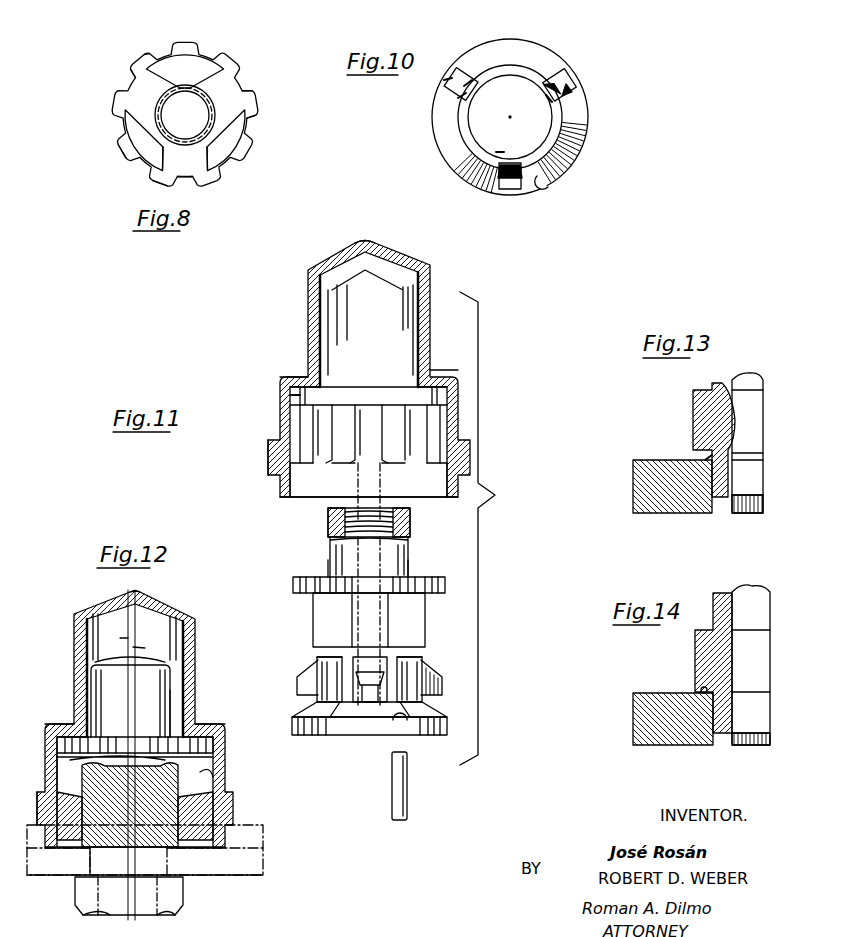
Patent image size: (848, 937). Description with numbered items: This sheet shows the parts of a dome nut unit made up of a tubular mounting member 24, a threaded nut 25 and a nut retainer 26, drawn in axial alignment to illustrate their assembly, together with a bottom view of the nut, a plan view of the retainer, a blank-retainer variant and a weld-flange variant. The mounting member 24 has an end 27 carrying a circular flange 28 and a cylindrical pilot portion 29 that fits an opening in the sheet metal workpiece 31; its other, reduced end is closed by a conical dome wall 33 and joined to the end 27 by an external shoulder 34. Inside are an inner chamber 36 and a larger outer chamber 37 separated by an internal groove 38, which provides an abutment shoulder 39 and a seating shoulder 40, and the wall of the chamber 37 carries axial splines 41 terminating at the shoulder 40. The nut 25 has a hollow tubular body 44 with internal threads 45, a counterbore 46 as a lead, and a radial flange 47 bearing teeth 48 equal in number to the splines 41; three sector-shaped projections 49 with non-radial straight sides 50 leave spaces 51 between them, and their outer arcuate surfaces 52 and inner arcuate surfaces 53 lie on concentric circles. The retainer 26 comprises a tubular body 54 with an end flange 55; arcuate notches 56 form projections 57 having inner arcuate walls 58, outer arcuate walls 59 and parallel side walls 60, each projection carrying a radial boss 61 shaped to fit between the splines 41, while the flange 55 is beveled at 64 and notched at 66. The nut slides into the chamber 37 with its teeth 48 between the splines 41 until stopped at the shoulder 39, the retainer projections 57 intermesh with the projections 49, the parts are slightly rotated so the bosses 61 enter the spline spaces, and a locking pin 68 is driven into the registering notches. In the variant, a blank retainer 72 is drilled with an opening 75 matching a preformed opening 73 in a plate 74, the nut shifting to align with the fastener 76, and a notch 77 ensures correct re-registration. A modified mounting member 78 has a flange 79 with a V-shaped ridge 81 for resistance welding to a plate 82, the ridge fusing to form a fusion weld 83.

In FIG. 11, the tubular mounting member 24 is at (308, 332).
In FIG. 12, the tubular mounting member 24 is at (68, 676).
In FIG. 8, the threaded nut 25 is at (245, 72).
In FIG. 11, the threaded nut 25 is at (419, 553).
In FIG. 12, the threaded nut 25 is at (184, 686).
In FIG. 10, the nut retainer 26 is at (563, 47).
In FIG. 11, the nut retainer 26 is at (427, 667).
In FIG. 11, the end of mounting member 27 is at (280, 422).
In FIG. 12, the end of mounting member 27 is at (43, 760).
In FIG. 11, the circular flange 28 is at (268, 458).
In FIG. 12, the circular flange 28 is at (37, 797).
In FIG. 11, the cylindrical pilot portion 29 is at (280, 490).
In FIG. 12, the sheet metal workpiece 31 is at (255, 825).
In FIG. 11, the conical dome wall 33 is at (358, 250).
In FIG. 12, the conical dome wall 33 is at (103, 610).
In FIG. 11, the external shoulder 34 is at (445, 372).
In FIG. 12, the external shoulder 34 is at (60, 723).
In FIG. 11, the inner chamber 36 is at (396, 302).
In FIG. 12, the inner chamber 36 is at (157, 636).
In FIG. 11, the outer chamber 37 is at (332, 490).
In FIG. 11, the internal groove 38 is at (290, 390).
In FIG. 11, the abutment shoulder 39 is at (390, 392).
In FIG. 11, the seating shoulder 40 is at (290, 398).
In FIG. 11, the splines 41 is at (362, 418).
In FIG. 12, the splines 41 is at (45, 740).
In FIG. 11, the hollow tubular body 44 is at (337, 548).
In FIG. 12, the hollow tubular body 44 is at (100, 677).
In FIG. 8, the internal threads 45 is at (185, 115).
In FIG. 11, the internal threads 45 is at (328, 518).
In FIG. 8, the counterbore 46 is at (208, 110).
In FIG. 8, the radial flange 47 is at (255, 110).
In FIG. 11, the radial flange 47 is at (293, 588).
In FIG. 12, the radial flange 47 is at (135, 745).
In FIG. 8, the teeth 48 is at (150, 62).
In FIG. 11, the teeth 48 is at (448, 567).
In FIG. 12, the teeth 48 is at (192, 727).
In FIG. 8, the projections 49 is at (196, 72).
In FIG. 11, the projections 49 is at (322, 615).
In FIG. 8, the straight sides 50 is at (152, 112).
In FIG. 8, the spaces 51 is at (133, 85).
In FIG. 8, the outer arcuate surfaces 52 is at (145, 172).
In FIG. 8, the inner arcuate surfaces 53 is at (185, 115).
In FIG. 10, the tubular body 54 is at (500, 66).
In FIG. 11, the end flange 55 is at (445, 722).
In FIG. 10, the arcuate notches 56 is at (502, 72).
In FIG. 11, the arcuate notches 56 is at (353, 658).
In FIG. 10, the projections 57 is at (550, 97).
In FIG. 11, the projections 57 is at (327, 657).
In FIG. 10, the inner arcuate walls 58 is at (510, 158).
In FIG. 10, the outer arcuate walls 59 is at (458, 72).
In FIG. 10, the side walls 60 is at (473, 77).
In FIG. 10, the radial boss 61 is at (573, 75).
In FIG. 11, the radial boss 61 is at (312, 682).
In FIG. 12, the radial boss 61 is at (126, 816).
In FIG. 11, the beveled surface 64 is at (347, 712).
In FIG. 10, the notch 66 is at (543, 183).
In FIG. 11, the notch 66 is at (403, 727).
In FIG. 11, the locking pin 68 is at (397, 790).
In FIG. 12, the locking pin 68 is at (213, 777).
In FIG. 12, the blank retainer 72 is at (72, 848).
In FIG. 12, the preformed opening 73 is at (163, 857).
In FIG. 12, the plate 74 is at (255, 873).
In FIG. 12, the opening 75 is at (135, 801).
In FIG. 12, the fastener 76 is at (78, 902).
In FIG. 12, the notch 77 is at (197, 850).
In FIG. 13, the modified mounting member 78 is at (753, 388).
In FIG. 14, the modified mounting member 78 is at (760, 602).
In FIG. 13, the flange 79 is at (695, 402).
In FIG. 14, the flange 79 is at (702, 660).
In FIG. 13, the V-shaped ridge 81 is at (705, 458).
In FIG. 13, the plate 82 is at (652, 465).
In FIG. 14, the plate 82 is at (648, 693).
In FIG. 14, the fusion weld 83 is at (700, 692).